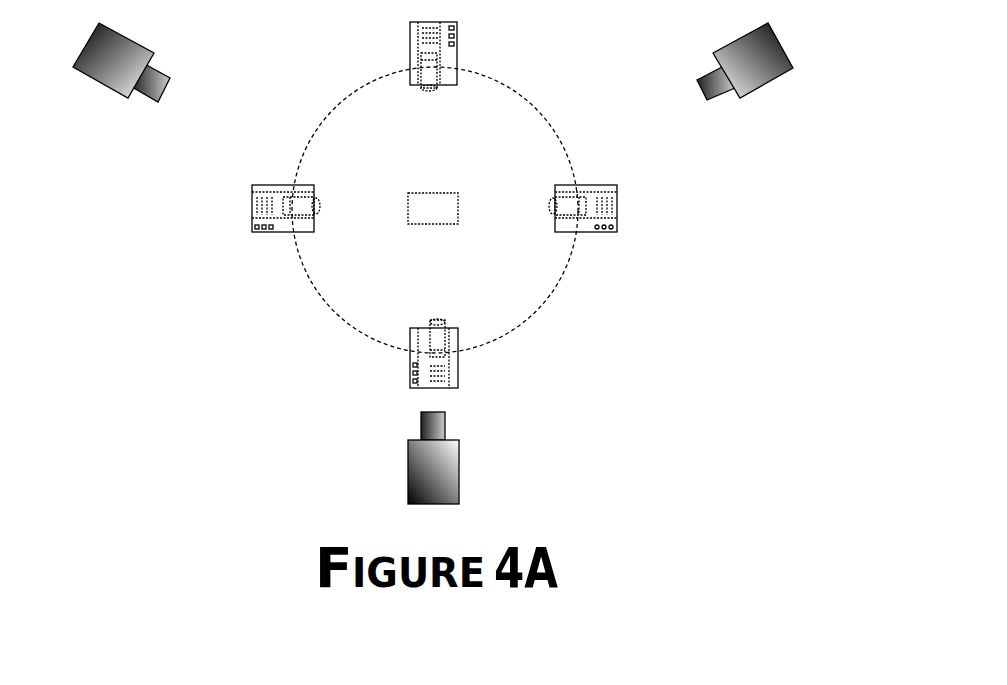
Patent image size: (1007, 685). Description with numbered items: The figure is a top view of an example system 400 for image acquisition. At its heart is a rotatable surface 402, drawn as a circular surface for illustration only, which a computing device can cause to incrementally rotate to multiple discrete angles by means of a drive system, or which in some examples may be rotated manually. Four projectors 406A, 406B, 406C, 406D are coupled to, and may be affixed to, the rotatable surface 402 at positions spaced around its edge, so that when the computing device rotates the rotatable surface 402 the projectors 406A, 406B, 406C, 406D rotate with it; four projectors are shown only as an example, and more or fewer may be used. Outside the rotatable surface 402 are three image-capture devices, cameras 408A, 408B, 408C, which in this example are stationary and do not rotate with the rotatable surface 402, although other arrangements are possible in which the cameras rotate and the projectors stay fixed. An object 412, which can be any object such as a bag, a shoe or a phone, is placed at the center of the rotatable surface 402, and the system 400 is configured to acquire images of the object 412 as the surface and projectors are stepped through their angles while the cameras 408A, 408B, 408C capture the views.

The system 400 is at (312, 79).
The rotatable surface 402 is at (545, 305).
The projector 406A is at (617, 224).
The projector 406B is at (253, 226).
The projector 406C is at (457, 31).
The projector 406D is at (458, 380).
The camera 408A is at (766, 80).
The camera 408B is at (90, 82).
The camera 408C is at (459, 470).
The object 412 is at (458, 209).